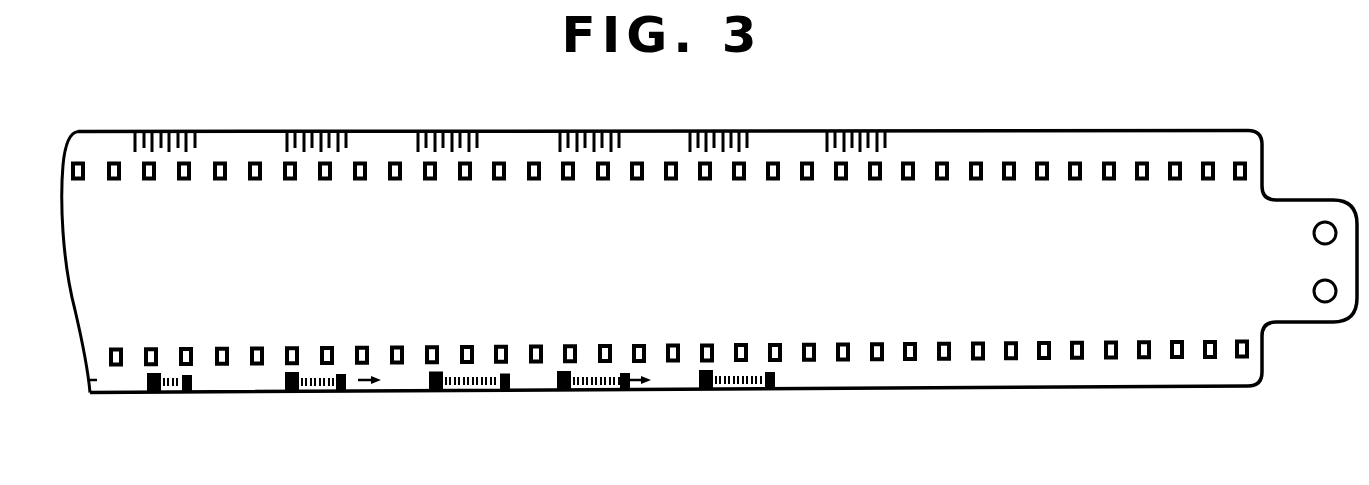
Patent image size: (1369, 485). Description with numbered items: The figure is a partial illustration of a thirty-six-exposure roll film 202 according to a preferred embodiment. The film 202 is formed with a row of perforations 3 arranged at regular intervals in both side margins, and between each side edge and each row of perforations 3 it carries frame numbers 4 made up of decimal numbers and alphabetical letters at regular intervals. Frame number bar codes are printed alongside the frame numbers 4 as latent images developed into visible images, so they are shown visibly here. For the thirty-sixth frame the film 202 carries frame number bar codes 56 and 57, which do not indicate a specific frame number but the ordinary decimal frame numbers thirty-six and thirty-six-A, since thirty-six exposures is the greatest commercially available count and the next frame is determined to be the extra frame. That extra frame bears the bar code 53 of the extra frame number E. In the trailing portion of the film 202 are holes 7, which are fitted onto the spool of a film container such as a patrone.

The 36-exposure roll film 202 is at (227, 108).
The frame numbers 4 is at (400, 131).
The perforations 3 is at (500, 164).
The frame number bar code 56 is at (620, 125).
The frame number bar code 57 is at (745, 125).
The bar code of extra frame number E 53 is at (885, 125).
The holes 7 is at (1325, 222).